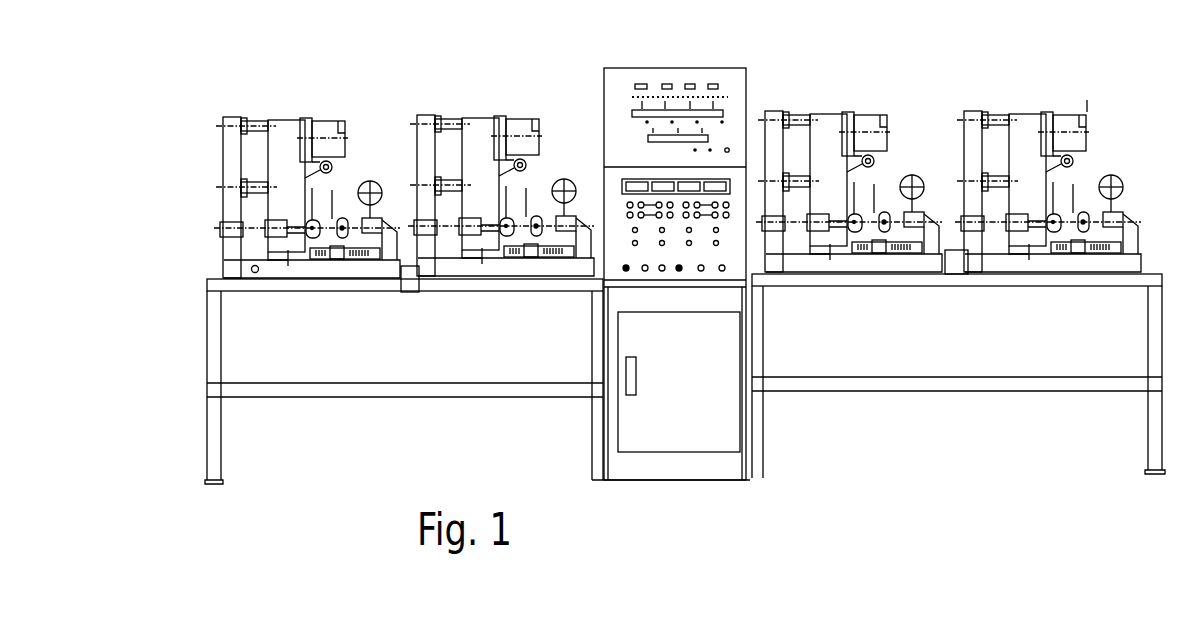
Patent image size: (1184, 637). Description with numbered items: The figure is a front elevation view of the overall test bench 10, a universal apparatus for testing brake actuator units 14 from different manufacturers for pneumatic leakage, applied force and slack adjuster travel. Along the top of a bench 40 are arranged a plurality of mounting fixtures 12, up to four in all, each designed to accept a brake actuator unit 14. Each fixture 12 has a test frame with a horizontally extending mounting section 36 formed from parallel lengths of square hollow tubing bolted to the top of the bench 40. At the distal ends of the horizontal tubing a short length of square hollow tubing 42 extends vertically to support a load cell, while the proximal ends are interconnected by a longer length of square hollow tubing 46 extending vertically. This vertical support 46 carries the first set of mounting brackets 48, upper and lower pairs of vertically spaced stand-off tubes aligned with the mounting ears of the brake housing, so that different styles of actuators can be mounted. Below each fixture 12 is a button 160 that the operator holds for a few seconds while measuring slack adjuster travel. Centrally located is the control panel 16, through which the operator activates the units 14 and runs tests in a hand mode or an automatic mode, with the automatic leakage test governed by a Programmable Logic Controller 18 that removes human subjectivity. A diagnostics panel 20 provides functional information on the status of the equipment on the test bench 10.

The test bench 10 is at (941, 418).
The mounting fixture 12 is at (383, 193).
The brake actuator unit 14 is at (344, 165).
The control panel 16 is at (689, 268).
The Programmable Logic Controller (PLC) 18 is at (683, 383).
The diagnostics panel 20 is at (633, 281).
The horizontally extending mounting section 36 is at (514, 272).
The bench 40 is at (343, 291).
The short length of square hollow tubing 42 is at (392, 233).
The longer length of square hollow tubing 46 is at (230, 213).
The first set of mounting brackets 48 is at (255, 136).
The button 160 is at (257, 273).